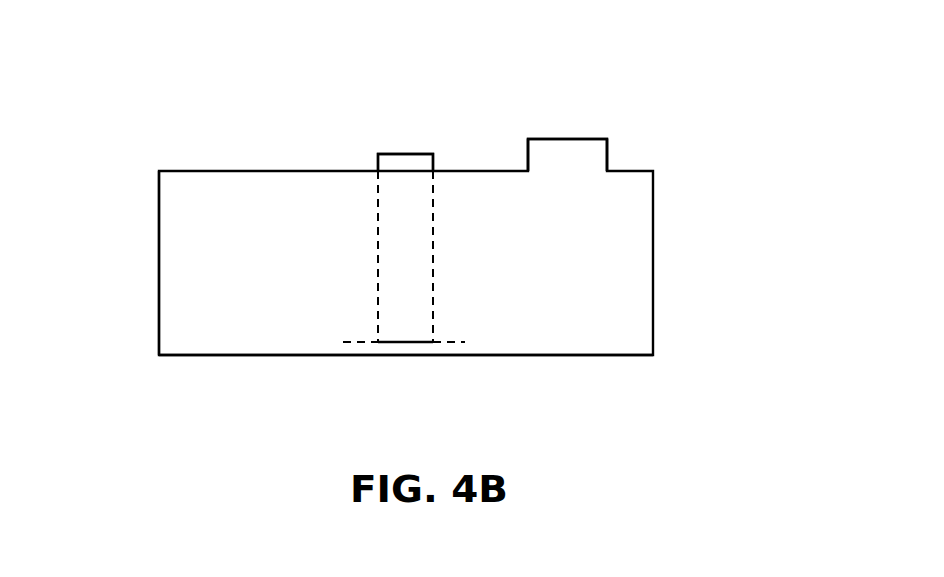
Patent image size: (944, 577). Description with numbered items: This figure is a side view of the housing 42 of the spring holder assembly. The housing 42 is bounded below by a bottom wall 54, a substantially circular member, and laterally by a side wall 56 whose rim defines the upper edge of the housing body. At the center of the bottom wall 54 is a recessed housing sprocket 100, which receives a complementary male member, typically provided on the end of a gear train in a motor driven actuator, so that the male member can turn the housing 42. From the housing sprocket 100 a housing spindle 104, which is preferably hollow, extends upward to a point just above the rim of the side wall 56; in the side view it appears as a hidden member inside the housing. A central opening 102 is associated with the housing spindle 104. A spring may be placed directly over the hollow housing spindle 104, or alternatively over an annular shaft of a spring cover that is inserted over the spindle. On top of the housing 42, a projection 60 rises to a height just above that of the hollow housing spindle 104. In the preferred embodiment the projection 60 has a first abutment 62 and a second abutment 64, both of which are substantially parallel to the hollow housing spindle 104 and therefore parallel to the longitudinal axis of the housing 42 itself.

The housing 42 is at (668, 280).
The bottom wall 54 is at (620, 355).
The side wall 56 is at (187, 307).
The projection 60 is at (567, 138).
The first abutment 62 is at (528, 154).
The second abutment 64 is at (608, 149).
The housing sprocket 100 is at (377, 348).
The central opening 102 is at (398, 205).
The housing spindle 104 is at (377, 253).